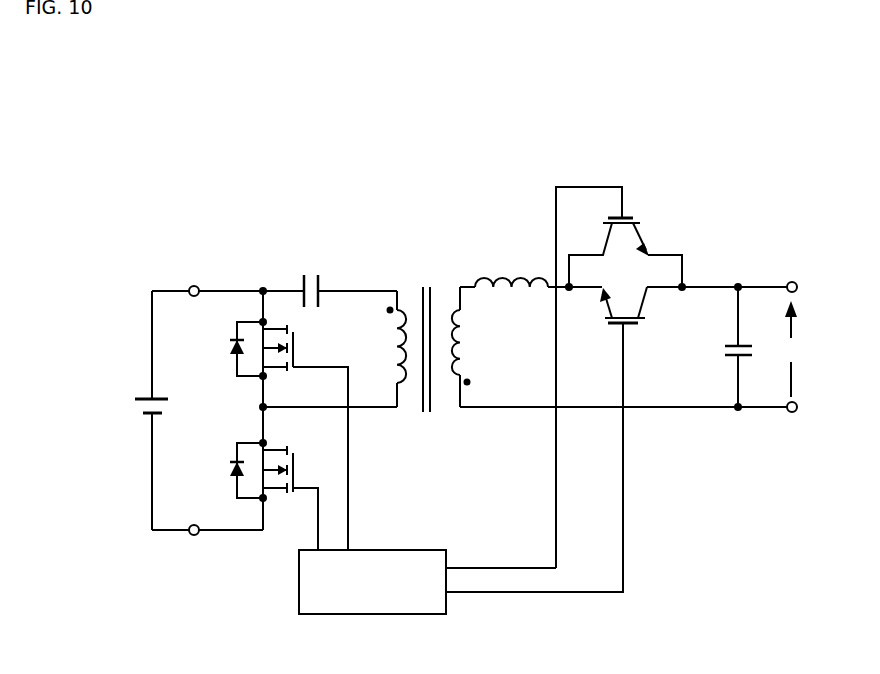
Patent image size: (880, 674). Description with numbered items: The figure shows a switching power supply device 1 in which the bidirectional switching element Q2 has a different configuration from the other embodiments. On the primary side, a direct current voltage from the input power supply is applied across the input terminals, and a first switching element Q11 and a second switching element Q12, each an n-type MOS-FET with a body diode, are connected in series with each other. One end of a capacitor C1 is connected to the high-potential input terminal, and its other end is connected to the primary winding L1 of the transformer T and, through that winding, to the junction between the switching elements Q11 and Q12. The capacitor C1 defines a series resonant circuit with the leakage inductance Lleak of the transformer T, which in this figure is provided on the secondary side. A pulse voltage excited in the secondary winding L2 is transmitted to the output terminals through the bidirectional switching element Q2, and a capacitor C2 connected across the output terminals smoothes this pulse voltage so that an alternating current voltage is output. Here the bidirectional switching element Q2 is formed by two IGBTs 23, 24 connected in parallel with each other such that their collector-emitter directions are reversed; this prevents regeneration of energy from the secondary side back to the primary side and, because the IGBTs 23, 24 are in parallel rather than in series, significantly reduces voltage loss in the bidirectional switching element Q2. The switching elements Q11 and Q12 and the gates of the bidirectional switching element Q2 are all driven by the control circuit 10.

The switching power supply device 1 is at (168, 155).
The control circuit 10 is at (437, 614).
The IGBT 23 is at (636, 210).
The IGBT 24 is at (613, 339).
The bidirectional switching element Q2 is at (676, 202).
The first switching element Q11 is at (228, 484).
The second switching element Q12 is at (233, 390).
The capacitor C1 is at (347, 277).
The capacitor C2 is at (726, 347).
The transformer T is at (429, 336).
The primary winding L1 is at (389, 349).
The secondary winding L2 is at (469, 347).
The leakage inductance Lleak is at (511, 265).